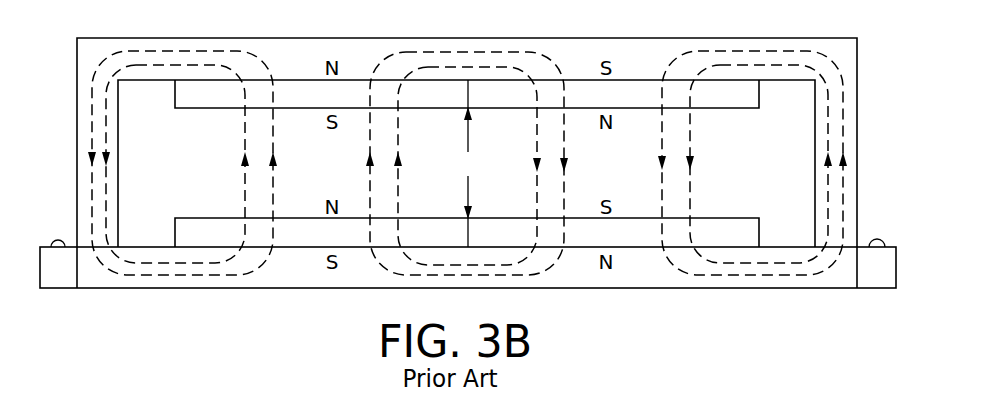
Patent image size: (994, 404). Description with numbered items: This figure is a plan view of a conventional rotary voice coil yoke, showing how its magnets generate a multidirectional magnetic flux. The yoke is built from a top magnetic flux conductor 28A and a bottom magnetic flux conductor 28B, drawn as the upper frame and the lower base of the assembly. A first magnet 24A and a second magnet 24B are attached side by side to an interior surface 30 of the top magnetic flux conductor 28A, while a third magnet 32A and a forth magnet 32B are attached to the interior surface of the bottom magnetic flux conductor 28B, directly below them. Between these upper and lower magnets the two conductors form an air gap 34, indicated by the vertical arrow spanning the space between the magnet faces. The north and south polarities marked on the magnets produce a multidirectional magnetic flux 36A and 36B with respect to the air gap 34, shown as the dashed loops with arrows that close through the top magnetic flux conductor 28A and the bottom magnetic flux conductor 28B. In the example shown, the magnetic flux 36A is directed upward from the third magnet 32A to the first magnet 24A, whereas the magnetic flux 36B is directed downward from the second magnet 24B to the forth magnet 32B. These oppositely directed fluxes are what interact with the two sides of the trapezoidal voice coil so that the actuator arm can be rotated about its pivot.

The top magnetic flux conductor 28A is at (833, 42).
The bottom magnetic flux conductor 28B is at (840, 289).
The interior surface 30 is at (142, 83).
The first magnet 24A is at (189, 102).
The second magnet 24B is at (729, 103).
The third magnet 32A is at (196, 225).
The forth magnet 32B is at (734, 227).
The air gap 34 is at (468, 163).
The magnetic flux 36A is at (274, 170).
The magnetic flux 36B is at (566, 157).